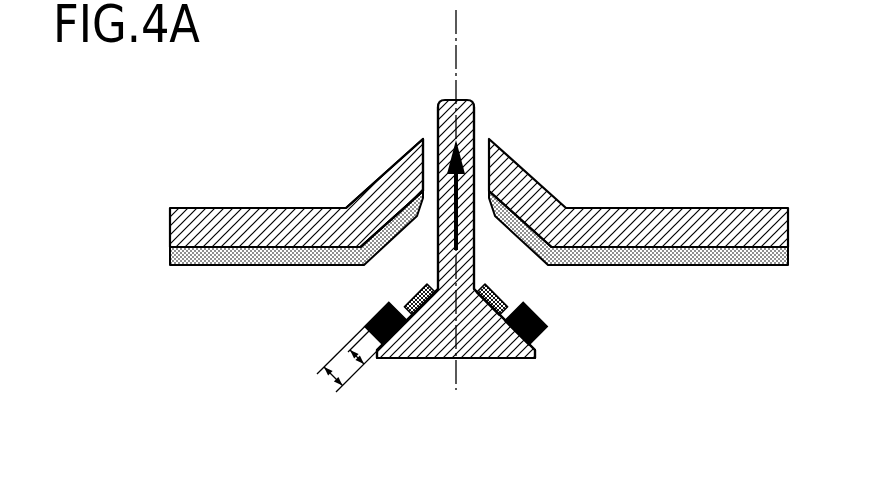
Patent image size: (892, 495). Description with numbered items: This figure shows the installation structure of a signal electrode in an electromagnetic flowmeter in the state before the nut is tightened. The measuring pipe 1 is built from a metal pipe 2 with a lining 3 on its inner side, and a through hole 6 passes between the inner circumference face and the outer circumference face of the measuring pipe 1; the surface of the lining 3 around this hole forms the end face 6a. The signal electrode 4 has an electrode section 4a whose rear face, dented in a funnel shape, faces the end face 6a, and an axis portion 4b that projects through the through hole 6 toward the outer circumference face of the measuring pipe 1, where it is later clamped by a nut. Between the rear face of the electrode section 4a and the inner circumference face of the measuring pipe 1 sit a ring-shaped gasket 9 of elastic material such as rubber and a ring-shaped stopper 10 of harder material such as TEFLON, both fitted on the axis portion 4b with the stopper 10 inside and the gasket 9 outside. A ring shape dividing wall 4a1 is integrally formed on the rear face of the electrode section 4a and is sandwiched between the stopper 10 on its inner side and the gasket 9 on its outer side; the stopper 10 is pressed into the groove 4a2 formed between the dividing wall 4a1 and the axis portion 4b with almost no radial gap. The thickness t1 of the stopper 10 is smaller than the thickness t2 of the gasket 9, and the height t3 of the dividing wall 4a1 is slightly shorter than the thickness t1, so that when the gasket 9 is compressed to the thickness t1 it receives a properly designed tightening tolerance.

The measuring pipe 1 is at (238, 208).
The metal pipe 2 is at (733, 218).
The lining 3 is at (743, 263).
The signal electrode 4 is at (503, 360).
The electrode section 4a is at (437, 360).
The ring shape dividing wall 4a1 is at (413, 303).
The groove 4a2 is at (430, 290).
The axis portion 4b is at (475, 120).
The through hole 6 is at (420, 153).
The end face 6a is at (405, 215).
The gasket 9 is at (366, 314).
The stopper 10 is at (490, 287).
The thickness of the stopper t1 is at (412, 292).
The thickness of the gasket t2 is at (341, 363).
The height of the ring shape dividing wall t3 is at (369, 368).